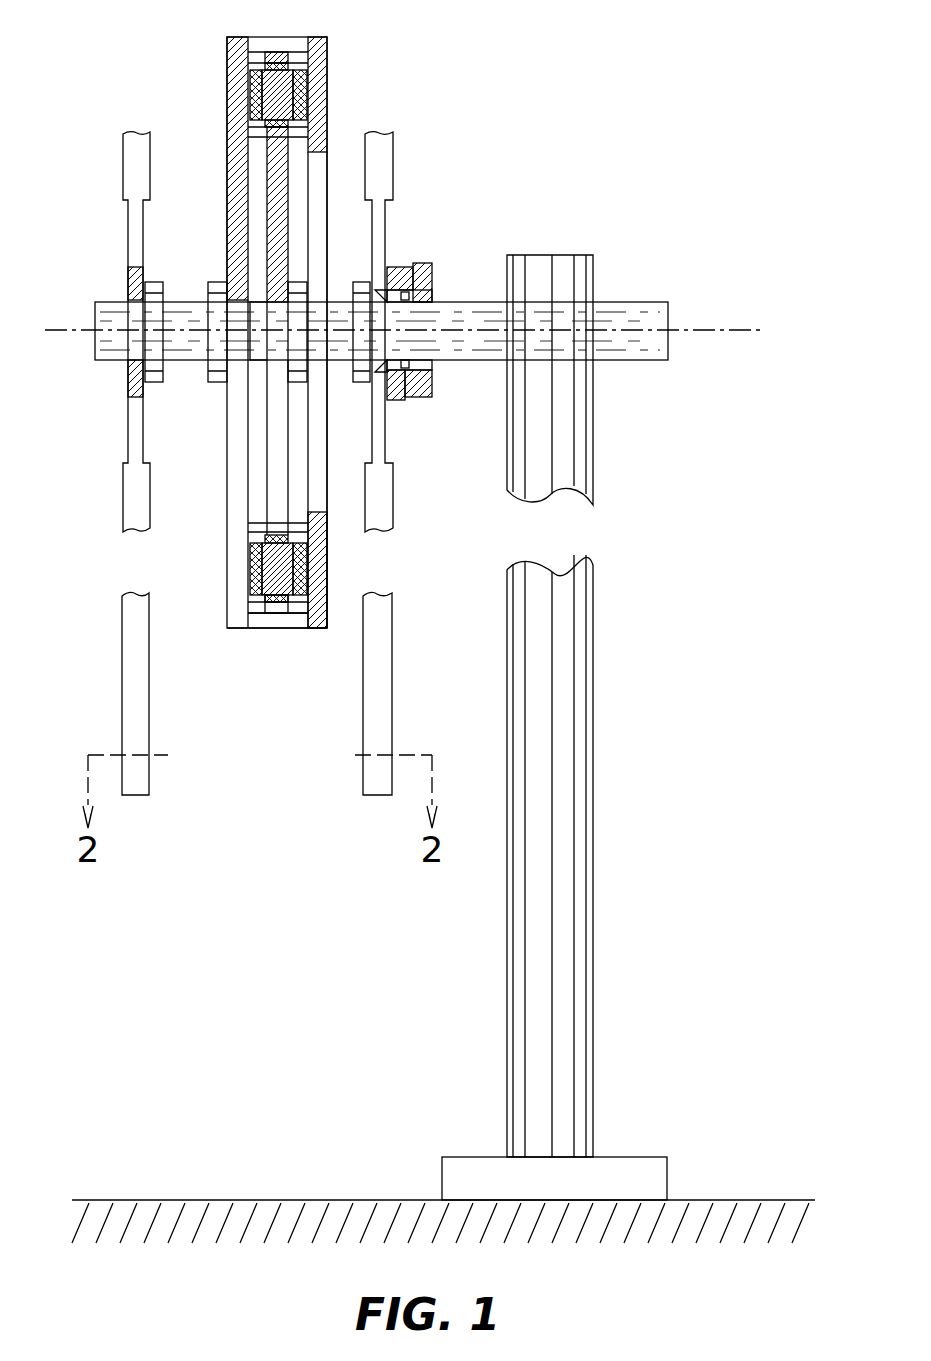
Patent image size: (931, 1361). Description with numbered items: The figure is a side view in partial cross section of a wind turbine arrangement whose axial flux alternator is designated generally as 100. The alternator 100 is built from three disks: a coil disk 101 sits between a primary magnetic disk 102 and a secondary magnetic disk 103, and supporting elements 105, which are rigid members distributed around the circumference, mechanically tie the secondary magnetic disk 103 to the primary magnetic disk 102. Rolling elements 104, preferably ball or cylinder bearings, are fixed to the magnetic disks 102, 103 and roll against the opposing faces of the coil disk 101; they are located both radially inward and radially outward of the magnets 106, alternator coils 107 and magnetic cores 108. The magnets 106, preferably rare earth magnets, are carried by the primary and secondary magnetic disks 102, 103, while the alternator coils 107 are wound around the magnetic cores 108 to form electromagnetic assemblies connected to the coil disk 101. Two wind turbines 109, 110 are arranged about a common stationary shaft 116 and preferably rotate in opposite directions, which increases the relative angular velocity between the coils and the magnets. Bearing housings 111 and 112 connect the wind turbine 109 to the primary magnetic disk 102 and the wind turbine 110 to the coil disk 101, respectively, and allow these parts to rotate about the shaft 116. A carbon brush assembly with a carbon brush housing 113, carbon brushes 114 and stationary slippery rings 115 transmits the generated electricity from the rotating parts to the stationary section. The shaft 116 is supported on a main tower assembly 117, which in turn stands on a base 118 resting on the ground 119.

The axial flux alternator 100 is at (288, 655).
The coil disk 101 is at (267, 190).
The primary magnetic disk 102 is at (227, 80).
The secondary magnetic disk 103 is at (328, 58).
The rolling elements 104 is at (265, 55).
The supporting elements 105 is at (290, 628).
The magnets 106 is at (318, 528).
The alternator coils 107 is at (265, 540).
The magnetic cores 108 is at (265, 597).
The wind turbine 109 is at (150, 785).
The wind turbine 110 is at (393, 670).
The bearing housing 111 is at (182, 300).
The bearing housing 112 is at (343, 300).
The carbon brush housing 113 is at (398, 268).
The carbon brushes 114 is at (425, 265).
The stationary slippery rings 115 is at (432, 372).
The stationary shaft 116 is at (645, 300).
The main tower assembly 117 is at (593, 655).
The base 118 is at (645, 1157).
The ground 119 is at (735, 1200).